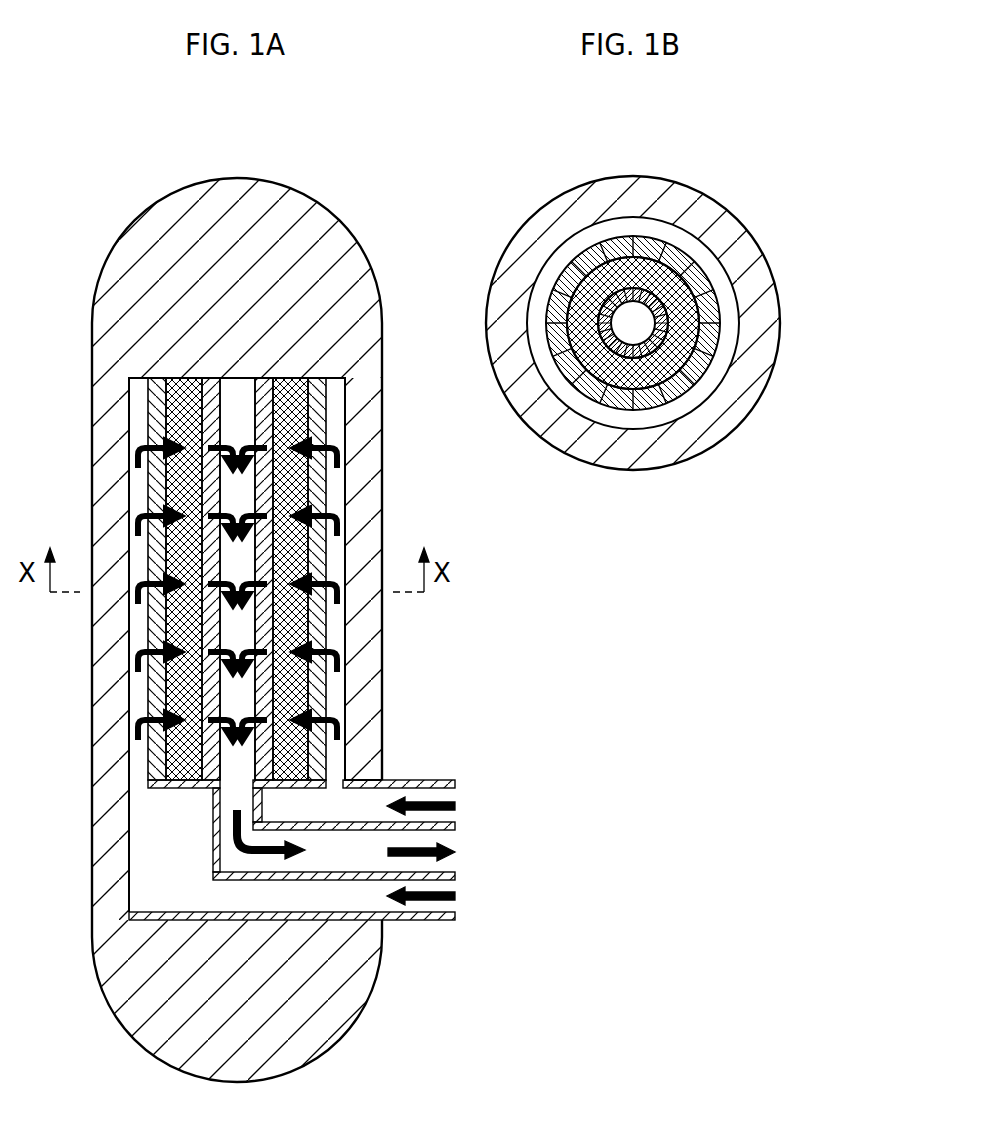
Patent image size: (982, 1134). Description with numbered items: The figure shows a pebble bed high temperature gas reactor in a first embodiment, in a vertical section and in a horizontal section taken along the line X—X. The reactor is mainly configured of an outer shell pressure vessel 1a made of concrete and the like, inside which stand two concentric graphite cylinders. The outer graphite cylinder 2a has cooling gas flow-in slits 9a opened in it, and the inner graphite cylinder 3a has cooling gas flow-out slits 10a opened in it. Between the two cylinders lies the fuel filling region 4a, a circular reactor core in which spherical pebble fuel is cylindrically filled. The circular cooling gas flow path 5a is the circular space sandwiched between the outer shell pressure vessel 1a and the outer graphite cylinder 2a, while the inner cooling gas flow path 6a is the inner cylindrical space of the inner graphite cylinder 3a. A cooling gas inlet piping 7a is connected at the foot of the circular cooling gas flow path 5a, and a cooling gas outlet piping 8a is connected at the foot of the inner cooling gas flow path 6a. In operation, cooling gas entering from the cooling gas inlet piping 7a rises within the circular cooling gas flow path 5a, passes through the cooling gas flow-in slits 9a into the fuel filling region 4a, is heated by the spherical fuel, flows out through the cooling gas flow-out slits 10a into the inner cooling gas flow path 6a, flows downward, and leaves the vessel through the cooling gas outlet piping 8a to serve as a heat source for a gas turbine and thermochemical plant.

In FIG. 1A, the outer shell pressure vessel 1a is at (270, 192).
In FIG. 1B, the outer shell pressure vessel 1a is at (640, 195).
In FIG. 1A, the outer graphite cylinder 2a is at (318, 638).
In FIG. 1B, the outer graphite cylinder 2a is at (690, 404).
In FIG. 1A, the inner graphite cylinder 3a is at (258, 386).
In FIG. 1B, the inner graphite cylinder 3a is at (670, 242).
In FIG. 1A, the fuel filling region 4a is at (288, 380).
In FIG. 1B, the fuel filling region 4a is at (720, 300).
In FIG. 1A, the circular cooling gas flow path 5a is at (335, 702).
In FIG. 1B, the circular cooling gas flow path 5a is at (710, 395).
In FIG. 1A, the inner cooling gas flow path 6a is at (236, 395).
In FIG. 1B, the inner cooling gas flow path 6a is at (632, 322).
In FIG. 1A, the cooling gas inlet piping 7a is at (425, 812).
In FIG. 1A, the cooling gas outlet piping 8a is at (425, 858).
In FIG. 1B, the cooling gas flow-in slits 9a is at (597, 243).
In FIG. 1B, the cooling gas flow-out slits 10a is at (632, 352).